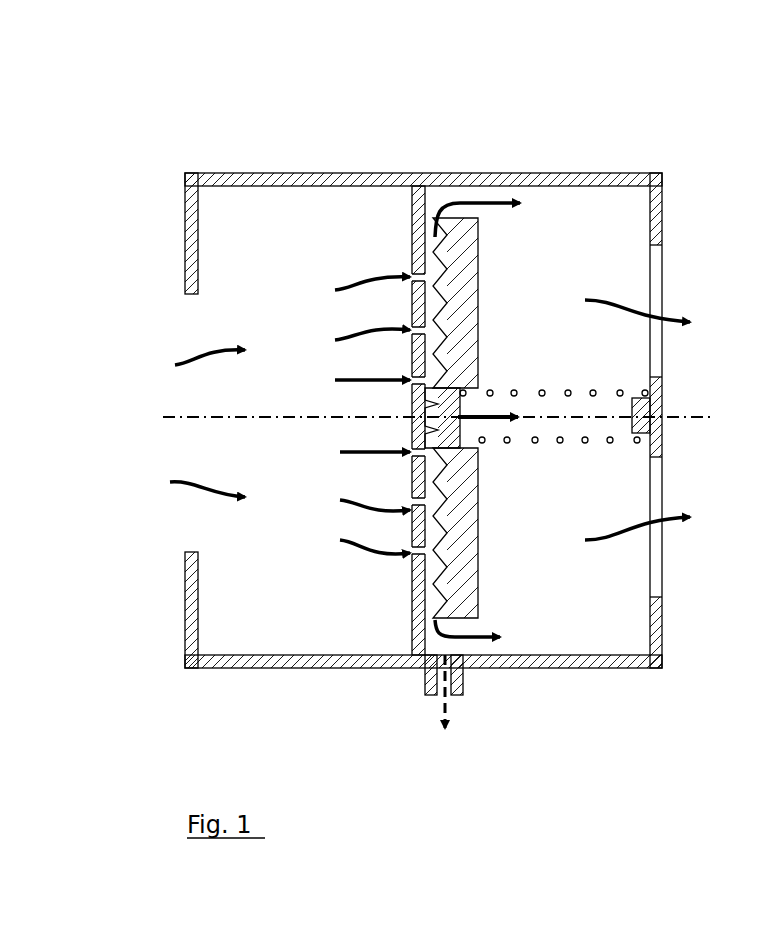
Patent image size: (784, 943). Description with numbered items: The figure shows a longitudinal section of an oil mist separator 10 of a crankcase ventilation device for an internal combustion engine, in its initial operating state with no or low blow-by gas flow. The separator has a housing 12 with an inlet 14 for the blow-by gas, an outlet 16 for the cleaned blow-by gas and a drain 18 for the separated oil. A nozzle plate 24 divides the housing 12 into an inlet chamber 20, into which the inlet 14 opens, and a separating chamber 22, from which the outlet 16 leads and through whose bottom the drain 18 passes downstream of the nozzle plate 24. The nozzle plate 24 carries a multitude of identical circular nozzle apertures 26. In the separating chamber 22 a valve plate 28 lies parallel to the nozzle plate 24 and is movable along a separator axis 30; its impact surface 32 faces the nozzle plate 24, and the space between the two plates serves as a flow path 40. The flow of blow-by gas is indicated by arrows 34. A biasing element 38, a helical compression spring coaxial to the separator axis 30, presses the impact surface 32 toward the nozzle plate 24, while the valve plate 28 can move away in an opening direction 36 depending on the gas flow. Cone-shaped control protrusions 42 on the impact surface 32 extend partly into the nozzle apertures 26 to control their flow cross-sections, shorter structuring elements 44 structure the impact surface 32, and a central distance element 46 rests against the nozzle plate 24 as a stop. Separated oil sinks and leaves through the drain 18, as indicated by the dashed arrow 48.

The oil mist separator 10 is at (200, 124).
The housing 12 is at (197, 170).
The inlet 14 is at (190, 315).
The outlet 16 is at (655, 476).
The drain 18 is at (460, 705).
The inlet chamber 20 is at (254, 255).
The separating chamber 22 is at (627, 235).
The nozzle plate 24 is at (412, 236).
The nozzle apertures 26 is at (412, 565).
The valve plate 28 is at (468, 318).
The separator axis 30 is at (250, 420).
The impact surface 32 is at (436, 258).
The arrows 34 is at (340, 350).
The opening direction 36 is at (490, 420).
The biasing element 38 is at (595, 389).
The flow path 40 is at (432, 232).
The control protrusions 42 is at (412, 498).
The structuring elements 44 is at (436, 593).
The distance element 46 is at (412, 413).
The dashed arrow 48 is at (425, 688).